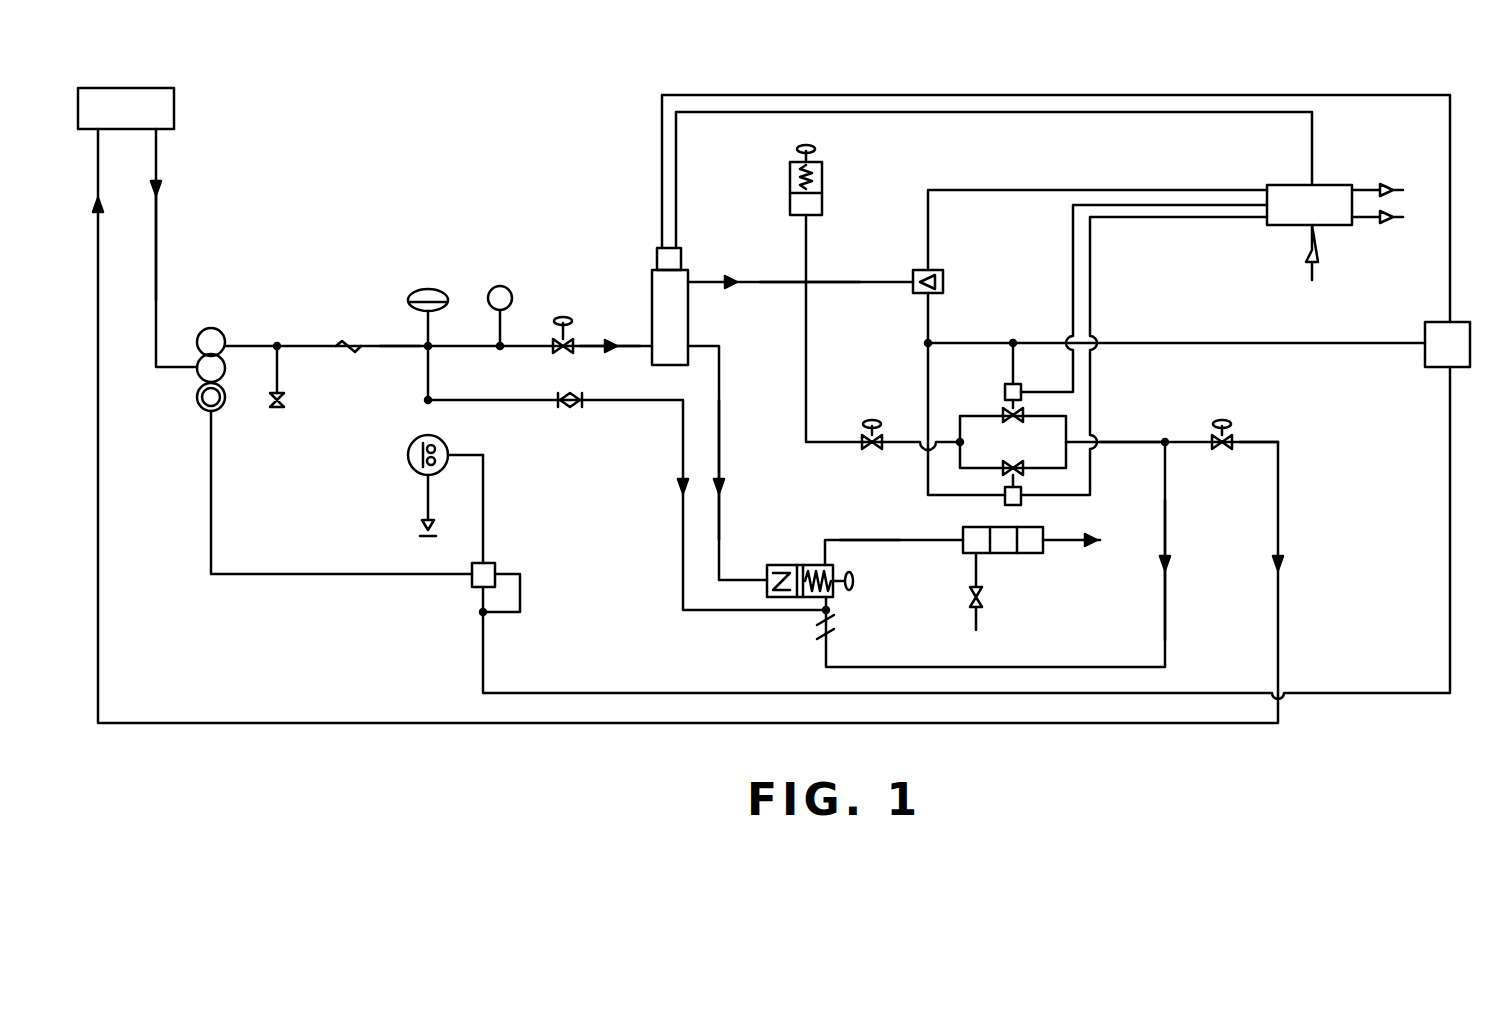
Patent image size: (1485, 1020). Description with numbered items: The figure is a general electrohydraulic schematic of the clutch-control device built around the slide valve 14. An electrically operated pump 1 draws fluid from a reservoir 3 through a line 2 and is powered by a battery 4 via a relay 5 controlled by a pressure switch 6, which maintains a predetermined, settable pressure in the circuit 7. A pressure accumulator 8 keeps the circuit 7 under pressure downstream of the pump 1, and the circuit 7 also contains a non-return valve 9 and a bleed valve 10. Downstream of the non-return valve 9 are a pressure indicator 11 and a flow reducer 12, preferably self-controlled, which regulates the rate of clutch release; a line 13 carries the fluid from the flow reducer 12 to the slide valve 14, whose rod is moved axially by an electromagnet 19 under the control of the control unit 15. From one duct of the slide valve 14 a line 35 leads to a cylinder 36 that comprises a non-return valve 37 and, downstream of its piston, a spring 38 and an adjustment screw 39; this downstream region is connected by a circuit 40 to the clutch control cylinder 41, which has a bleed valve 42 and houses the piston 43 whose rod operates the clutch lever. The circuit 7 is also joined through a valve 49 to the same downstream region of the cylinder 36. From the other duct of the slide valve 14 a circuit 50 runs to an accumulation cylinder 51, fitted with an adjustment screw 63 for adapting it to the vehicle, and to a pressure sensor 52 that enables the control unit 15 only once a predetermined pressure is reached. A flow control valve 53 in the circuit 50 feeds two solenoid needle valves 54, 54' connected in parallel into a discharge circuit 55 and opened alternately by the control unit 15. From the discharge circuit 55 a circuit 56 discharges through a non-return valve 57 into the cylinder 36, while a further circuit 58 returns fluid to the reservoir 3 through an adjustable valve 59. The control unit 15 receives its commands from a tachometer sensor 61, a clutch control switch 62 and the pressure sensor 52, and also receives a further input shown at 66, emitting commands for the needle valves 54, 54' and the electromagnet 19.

The pump 1 is at (222, 330).
The line 2 is at (157, 243).
The reservoir 3 is at (174, 120).
The battery 4 is at (1437, 330).
The relay 5 is at (487, 567).
The pressure switch 6 is at (408, 455).
The circuit 7 is at (398, 347).
The pressure accumulator 8 is at (429, 289).
The non-return valve 9 is at (348, 352).
The bleed valve 10 is at (270, 398).
The pressure indicator 11 is at (500, 286).
The flow reducer 12 is at (560, 354).
The line 13 is at (600, 336).
The slide valve 14 is at (659, 298).
The control unit 15 is at (1285, 186).
The electromagnet 19 is at (681, 262).
The line 35 is at (722, 443).
The cylinder 36 is at (787, 565).
The non-return valve 37 is at (775, 565).
The spring 38 is at (815, 565).
The adjustment screw 39 is at (855, 578).
The circuit 40 is at (863, 540).
The clutch control cylinder 41 is at (1035, 553).
The bleed valve 42 is at (970, 600).
The piston 43 is at (1003, 553).
The valve 49 is at (570, 407).
The circuit 50 is at (772, 281).
The accumulation cylinder 51 is at (822, 197).
The pressure sensor 52 is at (916, 296).
The flow control valve 53 is at (862, 432).
The solenoid needle valve 54 is at (981, 381).
The solenoid needle valve 54' is at (1013, 460).
The discharge circuit 55 is at (1130, 440).
The circuit 56 is at (1166, 545).
The non-return valve 57 is at (830, 634).
The circuit 58 is at (1260, 440).
The adjustable valve 59 is at (1222, 452).
The tachometer sensor 61 is at (1384, 182).
The clutch control switch 62 is at (1384, 224).
The adjustment screw 63 is at (813, 150).
The signal input 66 is at (1306, 256).